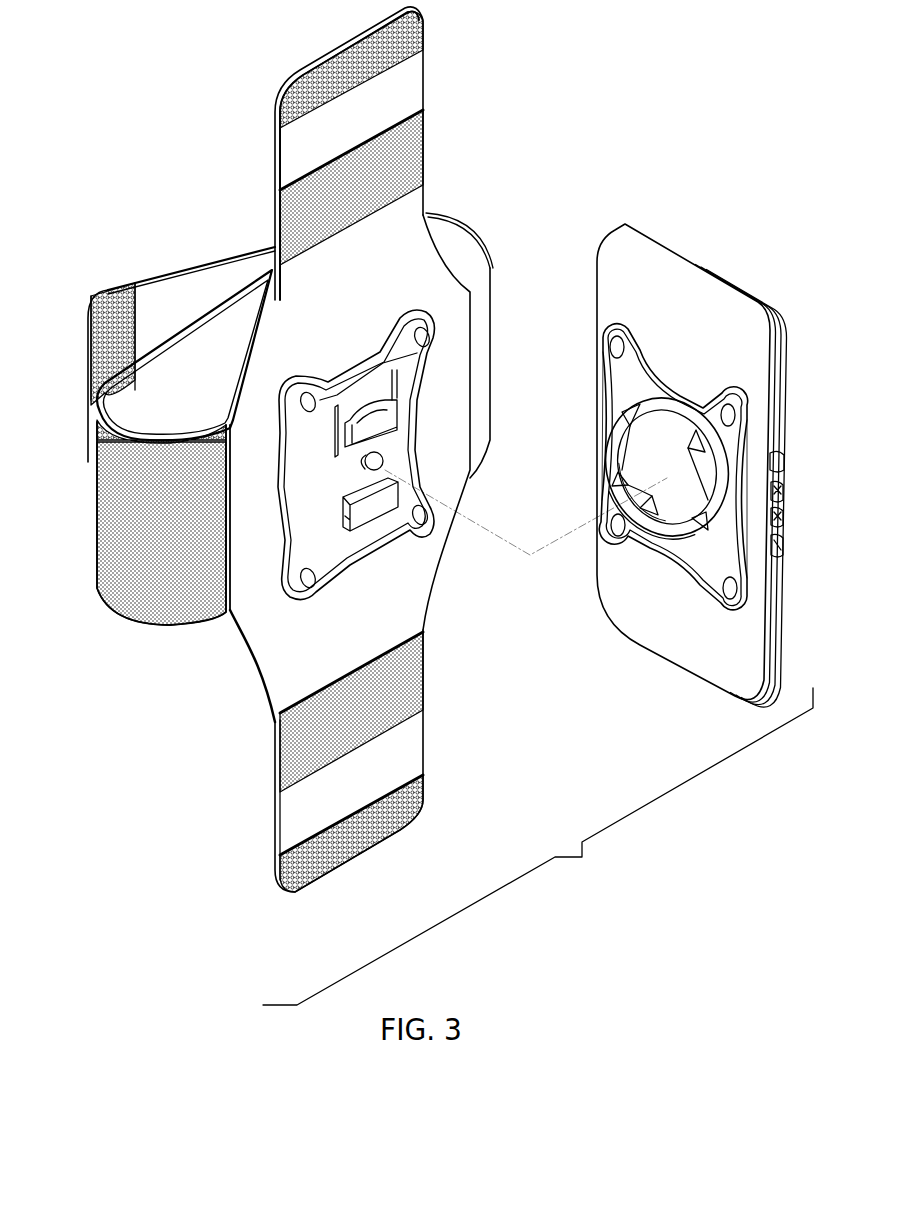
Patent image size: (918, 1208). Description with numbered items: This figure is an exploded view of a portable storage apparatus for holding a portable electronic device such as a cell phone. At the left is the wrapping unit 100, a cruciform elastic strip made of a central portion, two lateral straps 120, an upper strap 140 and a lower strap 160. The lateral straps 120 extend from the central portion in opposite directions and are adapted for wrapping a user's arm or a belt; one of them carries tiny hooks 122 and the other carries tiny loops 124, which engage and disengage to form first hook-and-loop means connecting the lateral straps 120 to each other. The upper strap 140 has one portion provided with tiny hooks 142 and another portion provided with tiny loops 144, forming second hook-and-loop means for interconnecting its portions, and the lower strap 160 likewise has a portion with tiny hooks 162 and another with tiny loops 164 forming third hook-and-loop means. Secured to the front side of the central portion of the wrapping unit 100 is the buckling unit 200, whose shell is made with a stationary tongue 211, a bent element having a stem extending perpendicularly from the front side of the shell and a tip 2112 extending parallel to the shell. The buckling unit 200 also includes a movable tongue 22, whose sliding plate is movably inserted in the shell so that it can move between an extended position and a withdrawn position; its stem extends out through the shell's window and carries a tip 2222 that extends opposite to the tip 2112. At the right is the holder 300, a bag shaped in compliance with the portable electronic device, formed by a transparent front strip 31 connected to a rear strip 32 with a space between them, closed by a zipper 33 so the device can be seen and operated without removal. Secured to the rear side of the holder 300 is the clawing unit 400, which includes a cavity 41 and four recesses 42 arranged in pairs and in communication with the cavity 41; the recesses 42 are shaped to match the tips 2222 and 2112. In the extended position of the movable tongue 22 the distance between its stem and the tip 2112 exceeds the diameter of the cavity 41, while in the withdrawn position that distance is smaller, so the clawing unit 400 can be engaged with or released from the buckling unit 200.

The wrapping unit 100 is at (187, 250).
The lateral straps 120 is at (90, 560).
The tiny hooks 122 is at (113, 292).
The tiny loops 124 is at (150, 605).
The upper strap 140 is at (447, 82).
The tiny hooks 142 is at (412, 33).
The tiny loops 144 is at (413, 157).
The lower strap 160 is at (440, 740).
The tiny hooks 162 is at (415, 685).
The tiny loops 164 is at (412, 805).
The buckling unit 200 is at (440, 325).
The stationary tongue 211 is at (430, 520).
The tip 2112 is at (367, 522).
The movable tongue 22 is at (405, 417).
The tip 2222 is at (393, 373).
The holder 300 is at (612, 215).
The front strip 31 is at (763, 290).
The rear strip 32 is at (753, 365).
The zipper 33 is at (782, 463).
The cavity 41 is at (700, 495).
The recesses 42 is at (660, 525).
The clawing unit 400 is at (673, 560).